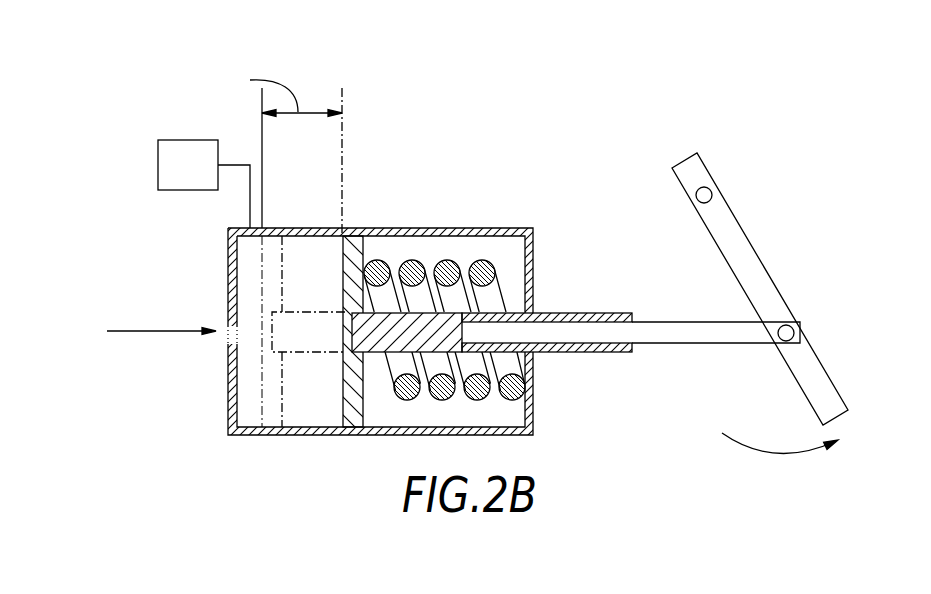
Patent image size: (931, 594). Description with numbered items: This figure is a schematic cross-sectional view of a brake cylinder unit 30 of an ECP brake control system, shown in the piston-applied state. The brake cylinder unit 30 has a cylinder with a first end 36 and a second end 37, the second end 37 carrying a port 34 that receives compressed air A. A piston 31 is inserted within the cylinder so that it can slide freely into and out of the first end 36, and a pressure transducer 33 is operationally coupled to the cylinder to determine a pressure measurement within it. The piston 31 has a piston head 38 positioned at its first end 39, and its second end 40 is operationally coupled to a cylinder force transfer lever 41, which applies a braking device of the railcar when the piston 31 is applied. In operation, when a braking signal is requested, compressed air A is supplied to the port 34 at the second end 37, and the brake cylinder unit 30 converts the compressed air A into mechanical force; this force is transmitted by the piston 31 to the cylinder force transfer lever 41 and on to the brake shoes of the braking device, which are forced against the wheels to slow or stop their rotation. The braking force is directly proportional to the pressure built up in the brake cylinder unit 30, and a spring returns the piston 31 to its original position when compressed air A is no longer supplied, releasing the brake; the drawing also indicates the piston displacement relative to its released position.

The brake cylinder unit 30 is at (636, 136).
The piston 31 is at (712, 344).
The pressure transducer 33 is at (158, 167).
The port 34 is at (228, 346).
The first end 36 is at (534, 241).
The second end 37 is at (228, 260).
The piston head 38 is at (343, 377).
The first end 39 is at (364, 354).
The second end 40 is at (787, 332).
The cylinder force transfer lever 41 is at (829, 370).
The compressed air A is at (133, 330).